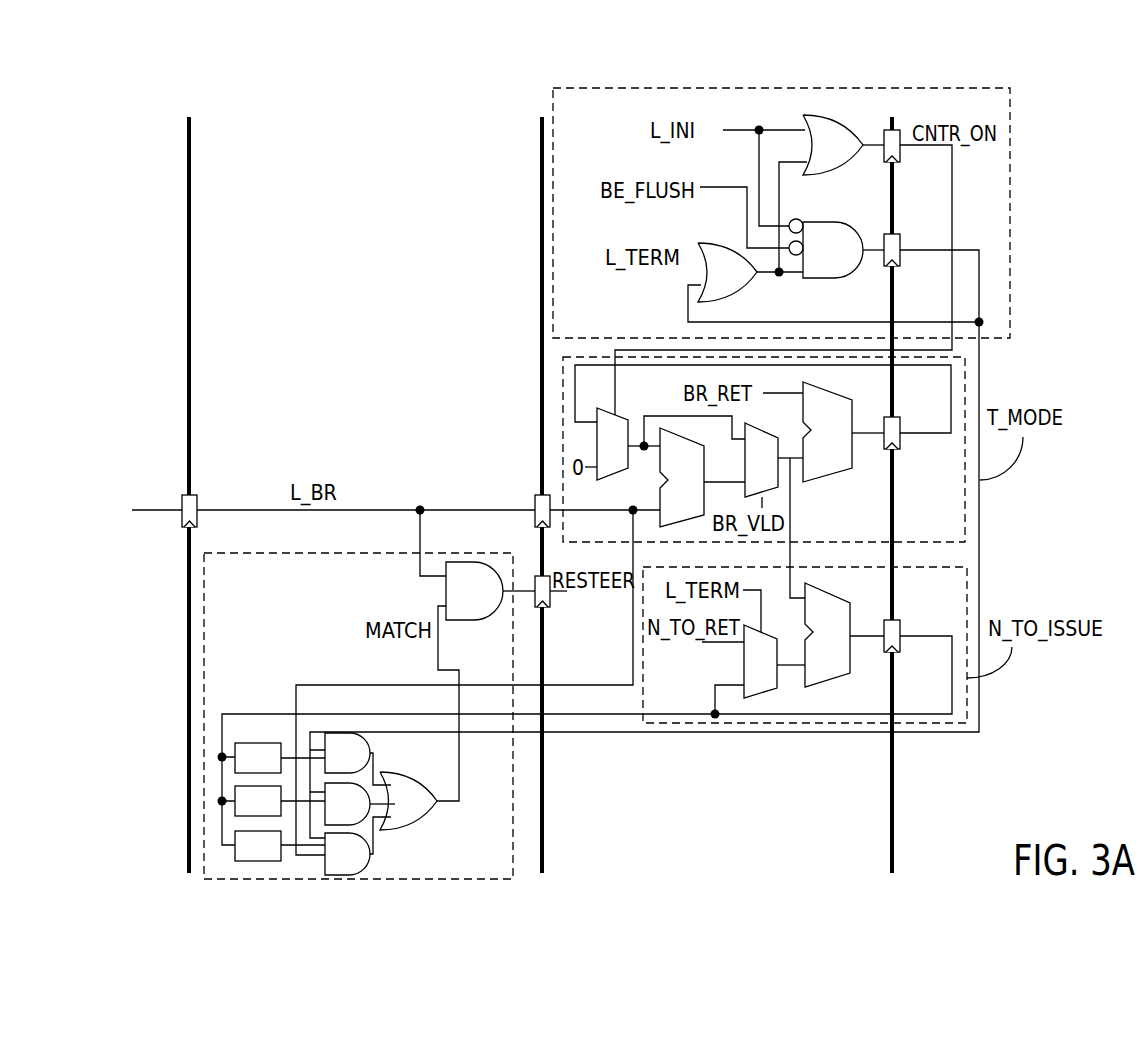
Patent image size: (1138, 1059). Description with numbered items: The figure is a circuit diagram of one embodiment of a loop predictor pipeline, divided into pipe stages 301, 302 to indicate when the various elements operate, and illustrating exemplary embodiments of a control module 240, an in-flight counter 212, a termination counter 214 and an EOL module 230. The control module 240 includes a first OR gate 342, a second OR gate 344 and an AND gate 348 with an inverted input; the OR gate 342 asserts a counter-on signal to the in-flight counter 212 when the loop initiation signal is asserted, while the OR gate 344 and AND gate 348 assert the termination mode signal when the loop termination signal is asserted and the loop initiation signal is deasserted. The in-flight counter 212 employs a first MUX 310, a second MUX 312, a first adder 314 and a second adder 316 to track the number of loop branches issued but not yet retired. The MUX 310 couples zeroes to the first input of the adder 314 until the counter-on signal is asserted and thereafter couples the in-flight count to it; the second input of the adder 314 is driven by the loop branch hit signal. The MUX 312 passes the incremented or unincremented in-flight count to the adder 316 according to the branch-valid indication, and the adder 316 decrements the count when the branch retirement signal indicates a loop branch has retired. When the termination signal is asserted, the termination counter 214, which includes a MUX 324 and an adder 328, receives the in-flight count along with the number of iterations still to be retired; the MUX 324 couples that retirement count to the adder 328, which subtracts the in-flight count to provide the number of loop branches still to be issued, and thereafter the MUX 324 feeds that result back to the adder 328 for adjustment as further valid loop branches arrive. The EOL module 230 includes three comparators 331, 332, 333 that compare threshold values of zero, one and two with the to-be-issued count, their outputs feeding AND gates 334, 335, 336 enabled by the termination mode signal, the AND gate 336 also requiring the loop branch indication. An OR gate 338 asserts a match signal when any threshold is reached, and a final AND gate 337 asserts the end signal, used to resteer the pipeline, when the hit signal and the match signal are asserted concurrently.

The pipe stage 301 is at (252, 460).
The pipe stage 302 is at (664, 460).
The control module 240 is at (605, 332).
The in-flight counter 212 is at (955, 539).
The termination counter 214 is at (955, 595).
The EOL module 230 is at (252, 583).
The first MUX 310 is at (628, 457).
The second MUX 312 is at (777, 472).
The first adder 314 is at (703, 492).
The second adder 316 is at (850, 442).
The MUX 324 is at (775, 677).
The adder 328 is at (848, 648).
The first OR gate 342 is at (857, 159).
The second OR gate 344 is at (750, 284).
The AND gate 348 is at (847, 262).
The comparator 331 is at (275, 770).
The comparator 332 is at (275, 813).
The comparator 333 is at (275, 857).
The AND gate 334 is at (358, 765).
The AND gate 335 is at (358, 816).
The AND gate 336 is at (358, 866).
The AND gate 337 is at (488, 603).
The OR gate 338 is at (430, 813).